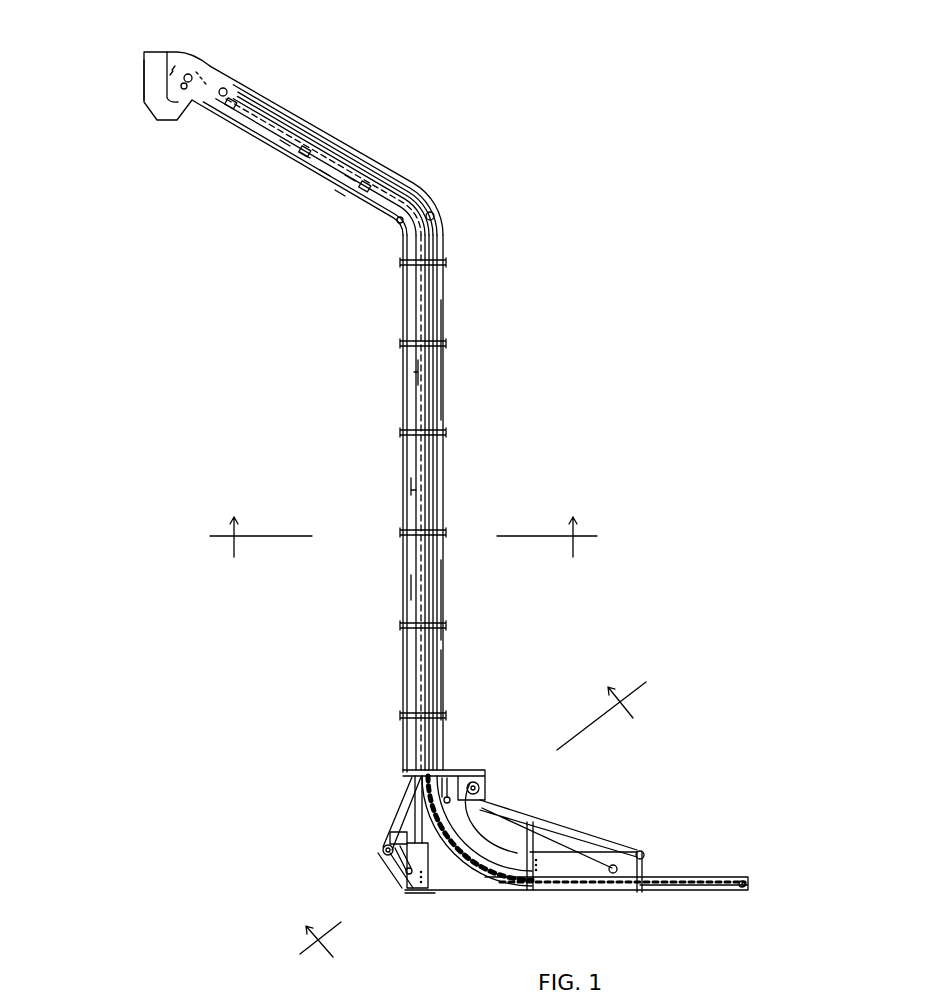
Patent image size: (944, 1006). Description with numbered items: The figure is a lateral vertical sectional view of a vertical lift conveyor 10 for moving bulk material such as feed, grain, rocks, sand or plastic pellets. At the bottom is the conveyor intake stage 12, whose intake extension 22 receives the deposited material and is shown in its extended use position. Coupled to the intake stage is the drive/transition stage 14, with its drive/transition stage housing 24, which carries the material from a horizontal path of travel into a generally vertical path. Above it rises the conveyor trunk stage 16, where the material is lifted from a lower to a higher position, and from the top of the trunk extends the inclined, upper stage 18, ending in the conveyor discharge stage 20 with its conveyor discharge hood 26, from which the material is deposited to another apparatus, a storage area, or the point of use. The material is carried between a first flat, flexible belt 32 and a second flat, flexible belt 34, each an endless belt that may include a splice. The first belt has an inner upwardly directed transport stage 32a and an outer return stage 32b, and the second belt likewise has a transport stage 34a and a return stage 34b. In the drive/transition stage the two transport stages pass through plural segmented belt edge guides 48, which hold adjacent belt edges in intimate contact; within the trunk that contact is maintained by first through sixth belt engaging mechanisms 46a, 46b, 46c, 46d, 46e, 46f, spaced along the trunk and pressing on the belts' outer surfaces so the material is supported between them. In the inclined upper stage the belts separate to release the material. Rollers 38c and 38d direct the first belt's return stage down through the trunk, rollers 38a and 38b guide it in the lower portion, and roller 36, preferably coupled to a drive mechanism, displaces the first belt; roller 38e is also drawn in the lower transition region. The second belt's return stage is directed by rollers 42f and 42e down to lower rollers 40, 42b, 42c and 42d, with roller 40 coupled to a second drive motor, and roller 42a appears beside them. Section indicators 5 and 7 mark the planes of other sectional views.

The vertical lift conveyor 10 is at (202, 648).
The conveyor intake stage 12 is at (673, 852).
The drive/transition stage 14 is at (547, 720).
The conveyor trunk stage 16 is at (462, 492).
The inclined, upper stage 18 is at (349, 76).
The conveyor discharge stage 20 is at (118, 46).
The intake extension 22 is at (706, 872).
The drive/transition stage housing 24 is at (568, 822).
The conveyor discharge hood 26 is at (144, 82).
The first flat, flexible belt 32 is at (434, 388).
The inner, upwardly directed, transport stage of first belt 32a is at (440, 683).
The outer return stage of first belt 32b is at (440, 602).
The second flat, flexible belt 34 is at (410, 490).
The inner upwardly directed, transport stage of second belt 34a is at (414, 372).
The outer return stage of second belt 34b is at (405, 587).
The roller 36 is at (486, 770).
The roller 38a is at (466, 797).
The roller 38b is at (617, 866).
The roller 38c is at (226, 88).
The roller 38d is at (436, 214).
The sprocket 38e is at (450, 796).
The roller 40 is at (406, 789).
The support block 42a is at (382, 866).
The roller 42b is at (380, 845).
The roller 42c is at (392, 887).
The roller 42d is at (750, 881).
The roller 42e is at (397, 221).
The roller 42f is at (184, 103).
The first belt engaging mechanism 46a is at (404, 715).
The second belt engaging mechanism 46b is at (404, 625).
The third belt engaging mechanism 46c is at (405, 530).
The fourth belt engaging mechanism 46d is at (404, 432).
The fifth belt engaging mechanism 46e is at (404, 343).
The sixth belt engaging mechanism 46f is at (404, 262).
The segmented belt edge guides 48 is at (490, 890).
The section line 5- 5 is at (402, 537).
The section line 7- 7 is at (466, 824).